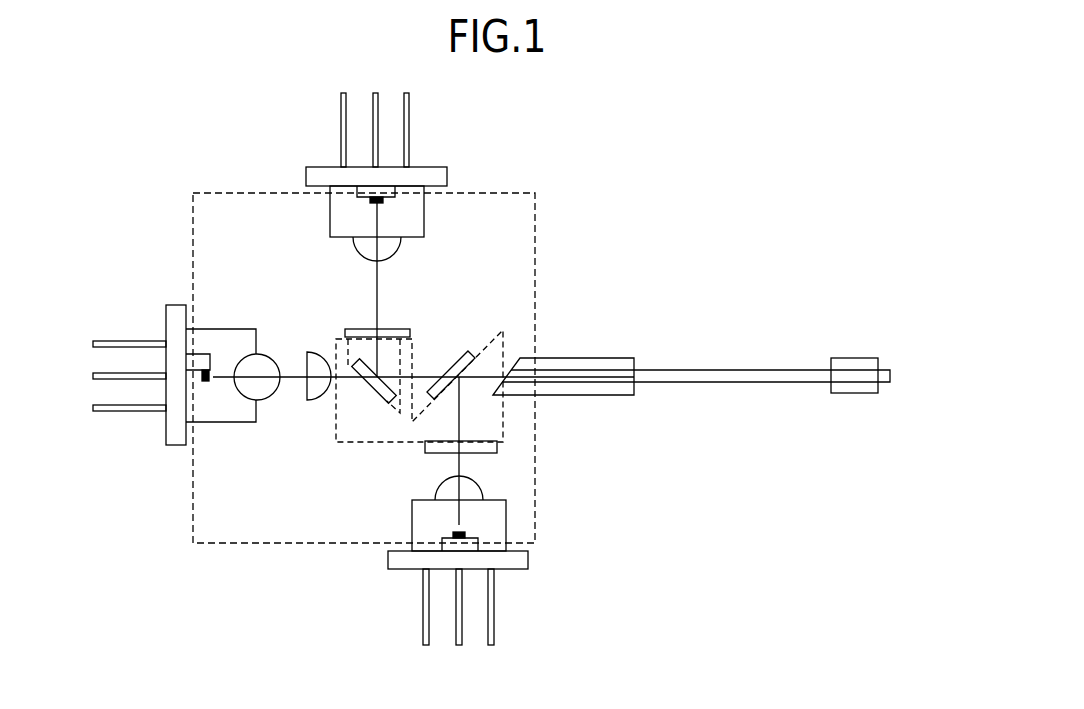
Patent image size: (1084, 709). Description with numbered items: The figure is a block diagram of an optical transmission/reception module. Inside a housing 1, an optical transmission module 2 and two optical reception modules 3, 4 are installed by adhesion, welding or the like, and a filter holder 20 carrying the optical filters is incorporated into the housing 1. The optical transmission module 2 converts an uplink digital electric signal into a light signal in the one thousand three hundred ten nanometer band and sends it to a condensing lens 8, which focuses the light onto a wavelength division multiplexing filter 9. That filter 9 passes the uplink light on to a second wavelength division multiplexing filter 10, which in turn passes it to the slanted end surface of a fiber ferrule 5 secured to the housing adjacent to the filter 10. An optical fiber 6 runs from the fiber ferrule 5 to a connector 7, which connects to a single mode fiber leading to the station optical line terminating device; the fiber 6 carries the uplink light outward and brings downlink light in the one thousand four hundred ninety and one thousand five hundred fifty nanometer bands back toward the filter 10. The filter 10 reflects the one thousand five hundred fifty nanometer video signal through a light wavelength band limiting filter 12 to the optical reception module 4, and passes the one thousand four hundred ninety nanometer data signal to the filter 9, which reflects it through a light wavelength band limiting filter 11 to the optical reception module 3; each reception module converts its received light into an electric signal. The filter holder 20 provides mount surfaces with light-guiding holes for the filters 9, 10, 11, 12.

The housing 1 is at (536, 203).
The optical transmission module 2 is at (224, 329).
The optical reception module 3 is at (433, 167).
The optical reception module 4 is at (506, 518).
The fiber ferrule 5 is at (597, 358).
The optical fiber 6 is at (740, 370).
The connector 7 is at (865, 358).
The condensing lens 8 is at (316, 400).
The wavelength division multiplexing filter 9 is at (377, 394).
The wavelength division multiplexing filter 10 is at (463, 352).
The light wavelength band limiting filter 11 is at (398, 328).
The light wavelength band limiting filter 12 is at (497, 447).
The filter holder 20 is at (352, 442).